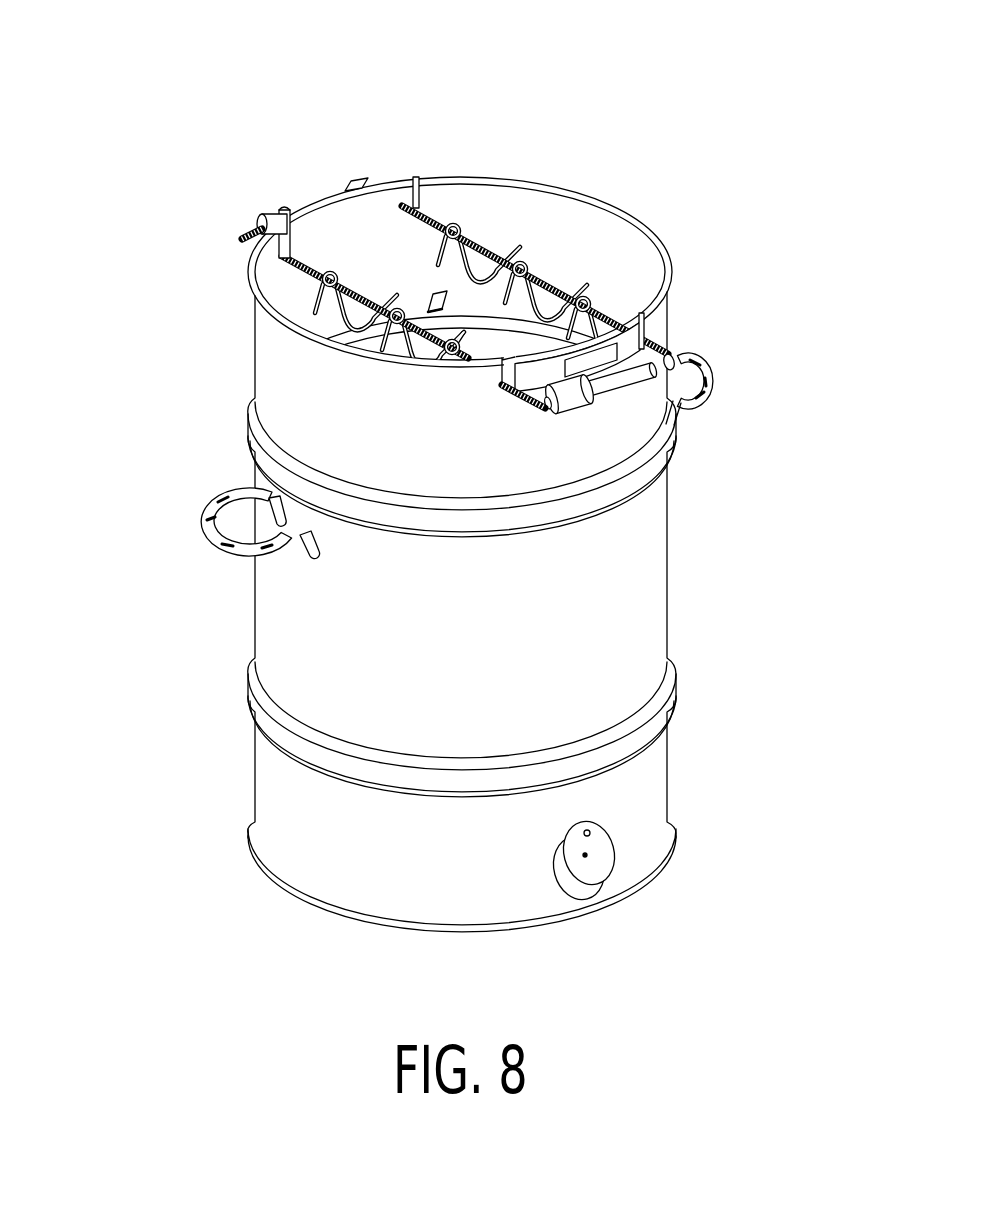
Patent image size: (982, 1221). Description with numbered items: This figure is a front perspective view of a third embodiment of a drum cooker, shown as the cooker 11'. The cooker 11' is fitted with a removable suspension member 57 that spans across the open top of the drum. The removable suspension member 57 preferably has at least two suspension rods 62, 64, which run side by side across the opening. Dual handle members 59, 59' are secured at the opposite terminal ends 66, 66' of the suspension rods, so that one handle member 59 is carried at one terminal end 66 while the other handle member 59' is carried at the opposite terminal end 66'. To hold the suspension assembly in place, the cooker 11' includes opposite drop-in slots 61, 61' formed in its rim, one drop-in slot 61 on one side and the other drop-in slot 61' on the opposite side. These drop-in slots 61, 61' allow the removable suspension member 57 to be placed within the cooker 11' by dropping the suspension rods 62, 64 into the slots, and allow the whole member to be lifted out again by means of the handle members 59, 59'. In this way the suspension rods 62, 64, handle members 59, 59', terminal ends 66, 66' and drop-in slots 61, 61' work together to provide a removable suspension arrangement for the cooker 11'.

The cooker 11' is at (472, 516).
The removable suspension member 57 is at (431, 222).
The handle member 59 is at (674, 415).
The handle member 59' is at (263, 164).
The drop-in slot 61 is at (512, 364).
The drop-in slot 61' is at (267, 142).
The suspension rod 62 is at (293, 273).
The suspension rod 64 is at (490, 250).
The terminal end 66 is at (375, 517).
The terminal end 66' is at (162, 214).